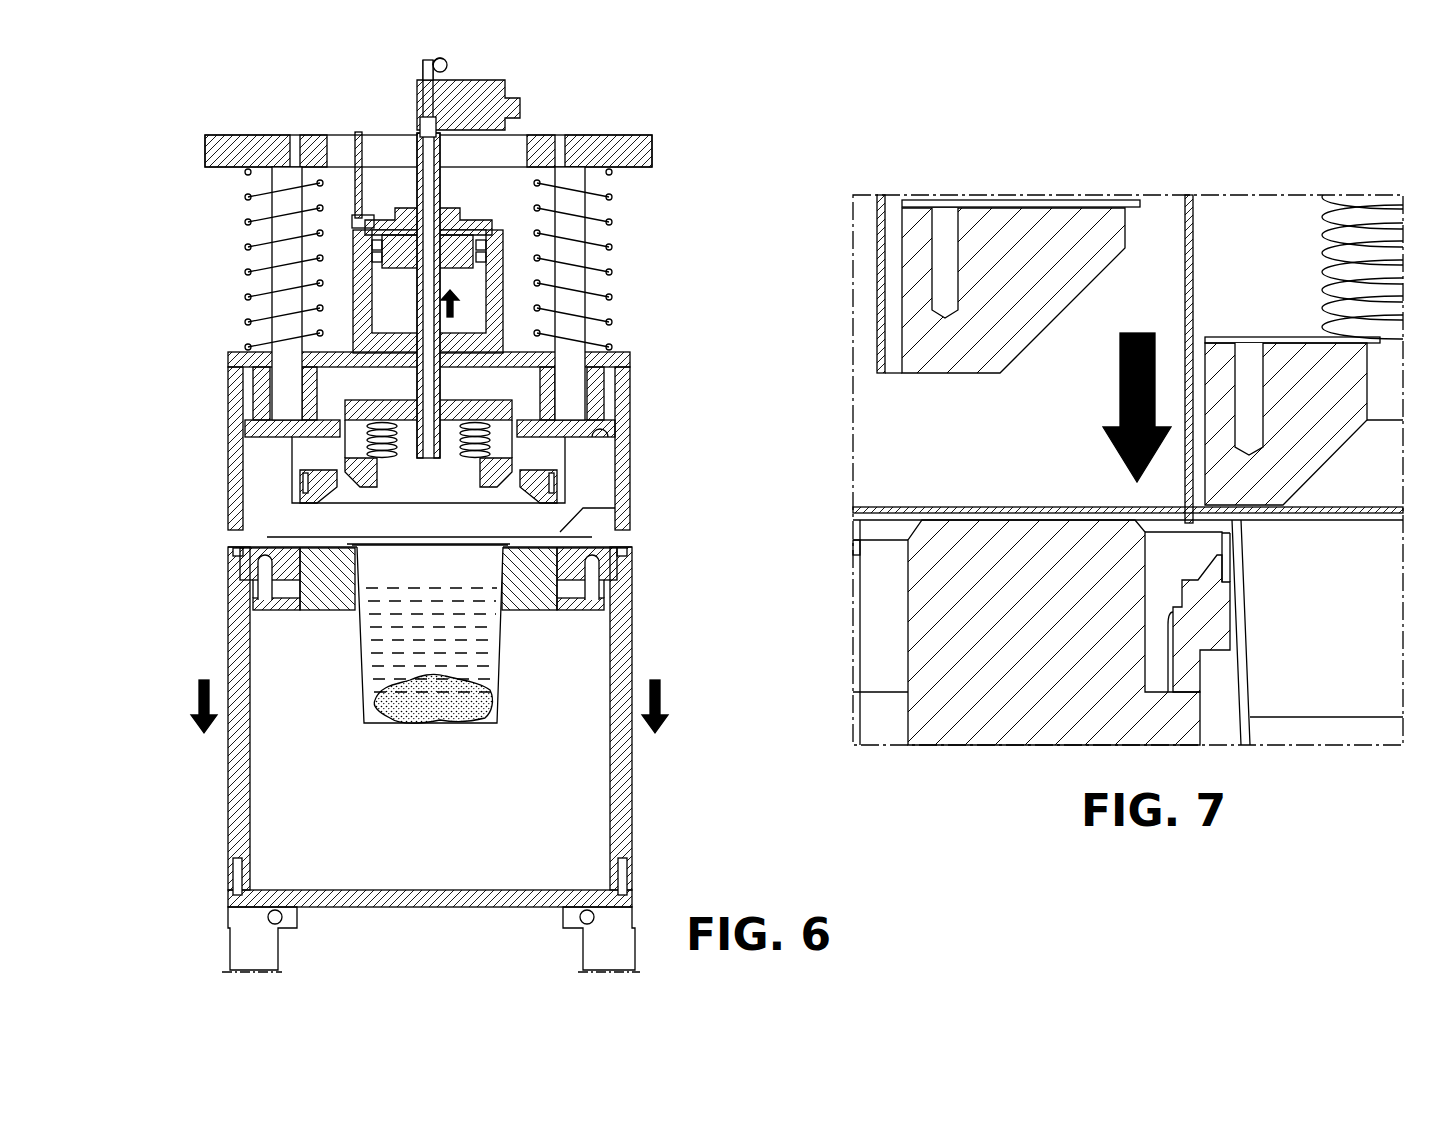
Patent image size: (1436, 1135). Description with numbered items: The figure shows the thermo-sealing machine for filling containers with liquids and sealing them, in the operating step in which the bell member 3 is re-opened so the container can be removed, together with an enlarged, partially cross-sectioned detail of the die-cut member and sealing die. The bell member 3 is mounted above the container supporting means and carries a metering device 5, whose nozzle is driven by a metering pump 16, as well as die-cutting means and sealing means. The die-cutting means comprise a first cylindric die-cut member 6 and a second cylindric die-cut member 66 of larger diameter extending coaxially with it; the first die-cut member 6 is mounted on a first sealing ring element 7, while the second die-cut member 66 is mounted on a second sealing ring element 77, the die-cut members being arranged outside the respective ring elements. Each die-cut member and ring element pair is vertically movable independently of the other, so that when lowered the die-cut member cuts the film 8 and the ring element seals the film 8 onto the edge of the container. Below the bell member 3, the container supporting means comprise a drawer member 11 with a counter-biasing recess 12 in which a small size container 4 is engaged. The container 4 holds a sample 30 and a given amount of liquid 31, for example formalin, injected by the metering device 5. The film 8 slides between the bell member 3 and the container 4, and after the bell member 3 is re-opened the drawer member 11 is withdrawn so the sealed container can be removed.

In FIG. 6, the bell member 3 is at (657, 428).
In FIG. 6, the container 4 is at (495, 705).
In FIG. 7, the container 4 is at (1243, 695).
In FIG. 6, the metering device 5 is at (527, 288).
In FIG. 6, the first cylindric die-cut member 6 is at (340, 438).
In FIG. 7, the first cylindric die-cut member 6 is at (1187, 497).
In FIG. 6, the first sealing ring element 7 is at (367, 477).
In FIG. 7, the first sealing ring element 7 is at (1297, 383).
In FIG. 6, the film 8 is at (557, 535).
In FIG. 7, the film 8 is at (925, 508).
In FIG. 6, the drawer member 11 is at (660, 657).
In FIG. 6, the counter-biasing recess 12 is at (323, 587).
In FIG. 7, the counter-biasing recess 12 is at (1032, 675).
In FIG. 6, the metering pump 16 is at (502, 108).
In FIG. 6, the sample 30 is at (403, 712).
In FIG. 6, the liquid 31 is at (477, 665).
In FIG. 7, the second cylindric die-cut member 66 is at (880, 317).
In FIG. 7, the second sealing ring element 77 is at (992, 333).